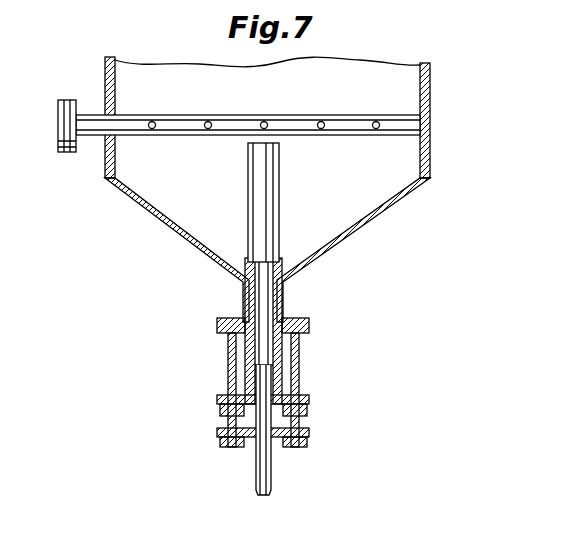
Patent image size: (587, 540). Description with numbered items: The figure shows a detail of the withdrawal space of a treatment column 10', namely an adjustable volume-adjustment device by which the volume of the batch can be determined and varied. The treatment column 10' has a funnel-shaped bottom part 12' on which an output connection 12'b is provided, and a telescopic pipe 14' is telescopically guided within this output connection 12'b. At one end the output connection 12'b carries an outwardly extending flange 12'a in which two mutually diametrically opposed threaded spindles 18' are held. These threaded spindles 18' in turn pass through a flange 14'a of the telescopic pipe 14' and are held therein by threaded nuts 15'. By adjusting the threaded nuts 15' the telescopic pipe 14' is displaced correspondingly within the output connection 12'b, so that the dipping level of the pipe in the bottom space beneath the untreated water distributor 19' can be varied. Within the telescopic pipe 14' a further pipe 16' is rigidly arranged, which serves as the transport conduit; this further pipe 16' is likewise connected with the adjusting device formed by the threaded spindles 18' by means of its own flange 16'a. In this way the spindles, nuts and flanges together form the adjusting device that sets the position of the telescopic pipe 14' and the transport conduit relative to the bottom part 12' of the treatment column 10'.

The treatment column 10' is at (319, 107).
The untreated water distributor 19' is at (225, 91).
The funnel-shaped bottom part 12' is at (275, 250).
The outwardly extending flange 12'a is at (208, 332).
The output connection 12'b is at (351, 331).
The telescopic pipe 14' is at (194, 205).
The flange of the telescopic pipe 14'a is at (332, 411).
The threaded nuts 15' is at (272, 415).
The further pipe 16' is at (343, 378).
The flange 16'a is at (208, 440).
The threaded spindles 18' is at (272, 390).